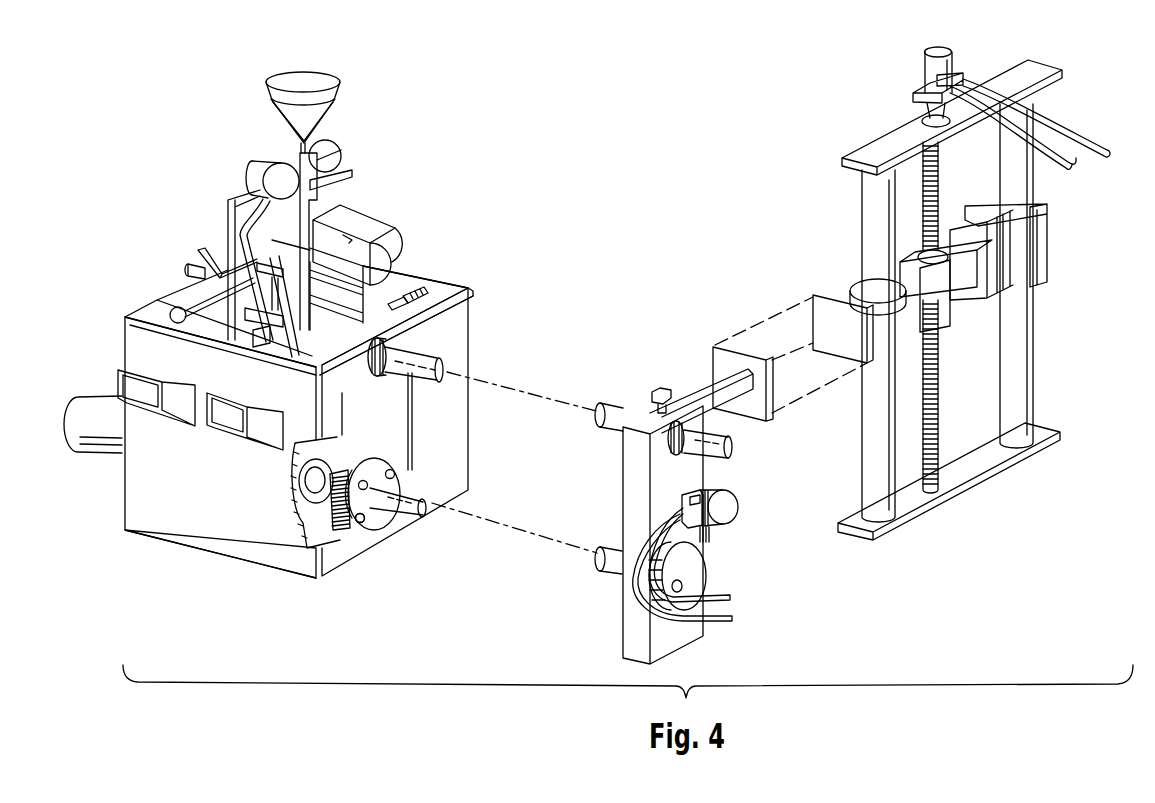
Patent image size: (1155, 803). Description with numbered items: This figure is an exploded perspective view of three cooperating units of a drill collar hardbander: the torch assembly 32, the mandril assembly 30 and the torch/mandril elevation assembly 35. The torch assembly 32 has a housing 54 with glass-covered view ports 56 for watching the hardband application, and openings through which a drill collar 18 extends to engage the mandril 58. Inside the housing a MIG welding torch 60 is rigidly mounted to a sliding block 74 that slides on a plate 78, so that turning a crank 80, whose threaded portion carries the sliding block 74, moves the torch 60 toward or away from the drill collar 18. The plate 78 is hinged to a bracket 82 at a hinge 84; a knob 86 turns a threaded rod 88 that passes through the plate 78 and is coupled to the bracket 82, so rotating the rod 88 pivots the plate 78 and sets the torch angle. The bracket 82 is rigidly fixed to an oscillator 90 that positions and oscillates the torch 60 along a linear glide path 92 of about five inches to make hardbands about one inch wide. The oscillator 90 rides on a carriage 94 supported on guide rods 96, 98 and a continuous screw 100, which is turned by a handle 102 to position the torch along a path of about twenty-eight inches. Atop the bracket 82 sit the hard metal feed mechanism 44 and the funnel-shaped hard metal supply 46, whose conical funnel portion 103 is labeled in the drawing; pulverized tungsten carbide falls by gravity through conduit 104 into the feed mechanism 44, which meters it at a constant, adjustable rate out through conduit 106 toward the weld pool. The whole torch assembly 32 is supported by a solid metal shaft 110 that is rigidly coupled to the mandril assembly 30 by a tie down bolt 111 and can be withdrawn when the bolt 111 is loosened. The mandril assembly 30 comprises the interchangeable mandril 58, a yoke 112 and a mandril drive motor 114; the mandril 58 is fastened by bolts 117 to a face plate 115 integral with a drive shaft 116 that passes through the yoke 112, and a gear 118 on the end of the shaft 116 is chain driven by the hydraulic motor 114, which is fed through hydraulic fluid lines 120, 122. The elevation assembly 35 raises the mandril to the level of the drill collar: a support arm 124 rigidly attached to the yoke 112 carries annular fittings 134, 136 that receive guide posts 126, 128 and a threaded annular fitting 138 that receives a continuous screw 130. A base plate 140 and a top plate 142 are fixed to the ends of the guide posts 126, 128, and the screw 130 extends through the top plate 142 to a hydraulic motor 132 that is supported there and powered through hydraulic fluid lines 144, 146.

The drill collar 18 is at (85, 403).
The mandril assembly 30 is at (728, 483).
The torch assembly 32 is at (202, 563).
The torch/mandril elevation assembly 35 is at (966, 287).
The hard metal feed mechanism 44 is at (334, 158).
The hard metal supply 46 is at (323, 80).
The housing 54 is at (132, 488).
The view ports 56 is at (167, 410).
The mandril 58 is at (333, 521).
The MIG welding torch 60 is at (268, 355).
The sliding block 74 is at (298, 348).
The plate 78 is at (298, 258).
The crank 80 is at (228, 243).
The bracket 82 is at (310, 223).
The hinge 84 is at (302, 330).
The knob 86 is at (172, 323).
The rod 88 is at (197, 303).
The oscillator 90 is at (393, 252).
The linear glide path 92 is at (340, 240).
The carriage 94 is at (420, 270).
The guide rod 96 is at (427, 288).
The guide rod 98 is at (400, 325).
The continuous screw 100 is at (430, 310).
The handle 102 is at (188, 266).
The funnel cone 103 is at (317, 123).
The conduit 104 is at (300, 143).
The conduit 106 is at (250, 168).
The solid metal shaft 110 is at (423, 383).
The tie down bolt 111 is at (667, 390).
The yoke 112 is at (627, 632).
The mandril drive motor 114 is at (728, 514).
The face plate 115 is at (400, 465).
The drive shaft 116 is at (378, 533).
The bolts 117 is at (362, 523).
The gear 118 is at (708, 558).
The hydraulic fluid line 120 is at (733, 600).
The hydraulic fluid line 122 is at (734, 620).
The support arm 124 is at (1020, 285).
The guide post 126 is at (870, 468).
The guide post 128 is at (1023, 395).
The continuous screw 130 is at (943, 410).
The hydraulic motor 132 is at (928, 48).
The annular fitting 134 is at (863, 283).
The annular fitting 136 is at (1047, 230).
The threaded annular fitting 138 is at (927, 240).
The base plate 140 is at (982, 460).
The top plate 142 is at (852, 157).
The hydraulic fluid line 144 is at (1087, 140).
The hydraulic fluid line 146 is at (1066, 163).